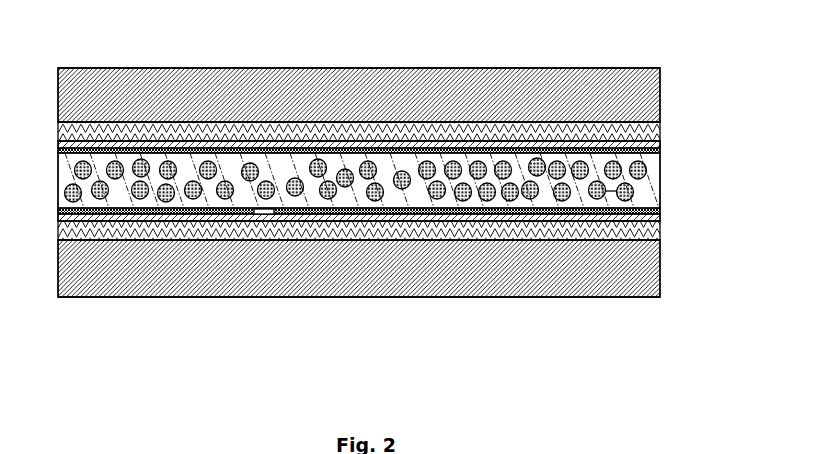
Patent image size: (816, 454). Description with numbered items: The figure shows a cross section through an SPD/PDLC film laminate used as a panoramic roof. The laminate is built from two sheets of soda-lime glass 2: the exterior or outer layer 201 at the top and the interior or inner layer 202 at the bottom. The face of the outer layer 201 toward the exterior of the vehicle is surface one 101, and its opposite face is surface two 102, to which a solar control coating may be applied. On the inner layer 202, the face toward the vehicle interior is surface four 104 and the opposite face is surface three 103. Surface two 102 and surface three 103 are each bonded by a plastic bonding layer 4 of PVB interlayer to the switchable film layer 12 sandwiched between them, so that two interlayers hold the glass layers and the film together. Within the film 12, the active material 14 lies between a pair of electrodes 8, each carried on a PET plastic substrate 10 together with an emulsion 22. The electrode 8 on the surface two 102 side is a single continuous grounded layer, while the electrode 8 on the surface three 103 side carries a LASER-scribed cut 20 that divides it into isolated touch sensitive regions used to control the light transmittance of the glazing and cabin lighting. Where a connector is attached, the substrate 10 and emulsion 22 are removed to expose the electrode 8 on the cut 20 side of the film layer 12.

The glass 2 is at (611, 66).
The plastic bonding layer 4 is at (142, 125).
The electrode 8 is at (382, 146).
The plastic substrate 10 is at (339, 138).
The film 12 is at (661, 142).
The active material 14 is at (450, 160).
The cut in electrode 20 is at (266, 217).
The emulsion 22 is at (55, 178).
The surface one 101 is at (175, 66).
The surface two 102 is at (264, 121).
The surface three 103 is at (511, 243).
The surface four 104 is at (522, 299).
The outer layer 201 is at (55, 88).
The inner layer 202 is at (55, 277).